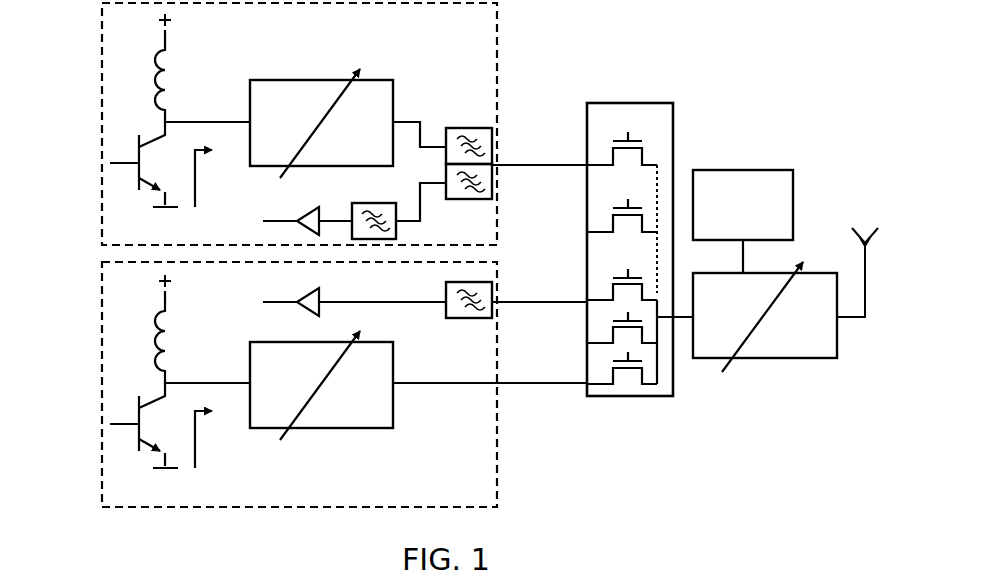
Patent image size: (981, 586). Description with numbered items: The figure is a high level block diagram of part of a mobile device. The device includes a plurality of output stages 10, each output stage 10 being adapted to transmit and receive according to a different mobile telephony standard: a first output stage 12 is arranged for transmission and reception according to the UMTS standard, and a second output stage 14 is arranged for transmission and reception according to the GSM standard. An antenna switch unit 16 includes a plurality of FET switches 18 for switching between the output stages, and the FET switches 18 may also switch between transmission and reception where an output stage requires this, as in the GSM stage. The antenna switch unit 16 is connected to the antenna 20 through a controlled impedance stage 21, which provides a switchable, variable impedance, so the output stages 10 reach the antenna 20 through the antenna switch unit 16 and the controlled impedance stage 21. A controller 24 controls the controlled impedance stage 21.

The output stages 10 is at (86, 211).
The first output stage 12 is at (498, 25).
The second output stage 14 is at (498, 448).
The antenna switch unit 16 is at (660, 225).
The FET switches 18 is at (643, 160).
The antenna 20 is at (862, 228).
The controlled impedance stage 21 is at (800, 360).
The controller 24 is at (775, 170).